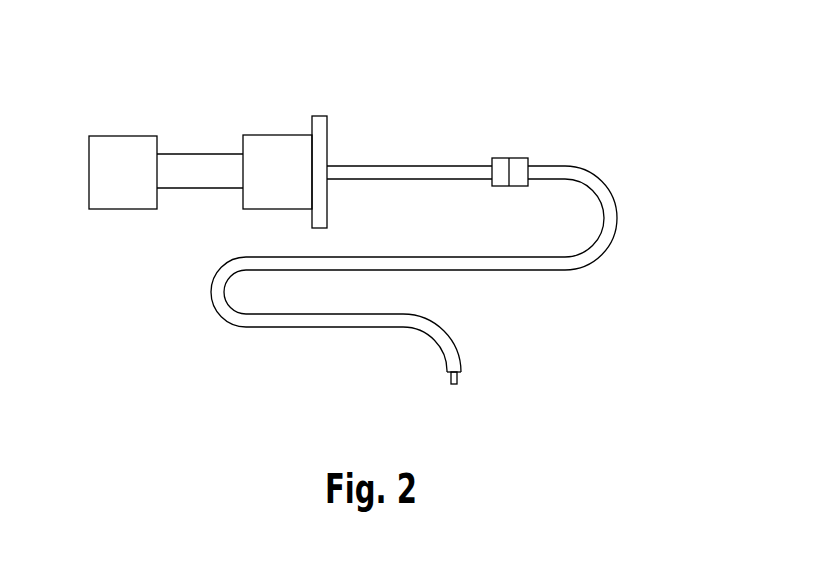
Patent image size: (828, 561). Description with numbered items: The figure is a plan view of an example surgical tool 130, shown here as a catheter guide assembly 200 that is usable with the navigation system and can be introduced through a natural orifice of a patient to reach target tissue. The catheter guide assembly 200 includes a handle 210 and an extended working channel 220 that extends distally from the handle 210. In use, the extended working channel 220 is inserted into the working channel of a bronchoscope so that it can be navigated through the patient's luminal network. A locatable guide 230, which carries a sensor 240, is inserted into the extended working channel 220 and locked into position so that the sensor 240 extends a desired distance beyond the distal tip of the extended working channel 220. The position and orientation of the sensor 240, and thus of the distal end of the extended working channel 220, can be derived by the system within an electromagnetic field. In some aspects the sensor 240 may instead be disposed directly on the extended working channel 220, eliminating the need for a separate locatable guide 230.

The surgical tool 130 is at (391, 212).
The catheter guide assembly 200 is at (273, 151).
The handle 210 is at (277, 134).
The extended working channel 220 is at (617, 218).
The locatable guide 230 is at (410, 163).
The sensor 240 is at (462, 378).